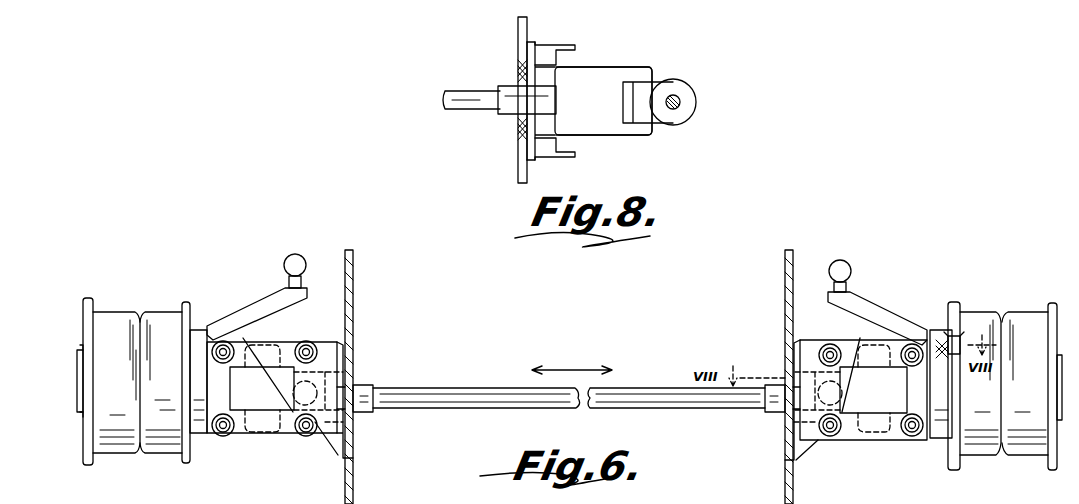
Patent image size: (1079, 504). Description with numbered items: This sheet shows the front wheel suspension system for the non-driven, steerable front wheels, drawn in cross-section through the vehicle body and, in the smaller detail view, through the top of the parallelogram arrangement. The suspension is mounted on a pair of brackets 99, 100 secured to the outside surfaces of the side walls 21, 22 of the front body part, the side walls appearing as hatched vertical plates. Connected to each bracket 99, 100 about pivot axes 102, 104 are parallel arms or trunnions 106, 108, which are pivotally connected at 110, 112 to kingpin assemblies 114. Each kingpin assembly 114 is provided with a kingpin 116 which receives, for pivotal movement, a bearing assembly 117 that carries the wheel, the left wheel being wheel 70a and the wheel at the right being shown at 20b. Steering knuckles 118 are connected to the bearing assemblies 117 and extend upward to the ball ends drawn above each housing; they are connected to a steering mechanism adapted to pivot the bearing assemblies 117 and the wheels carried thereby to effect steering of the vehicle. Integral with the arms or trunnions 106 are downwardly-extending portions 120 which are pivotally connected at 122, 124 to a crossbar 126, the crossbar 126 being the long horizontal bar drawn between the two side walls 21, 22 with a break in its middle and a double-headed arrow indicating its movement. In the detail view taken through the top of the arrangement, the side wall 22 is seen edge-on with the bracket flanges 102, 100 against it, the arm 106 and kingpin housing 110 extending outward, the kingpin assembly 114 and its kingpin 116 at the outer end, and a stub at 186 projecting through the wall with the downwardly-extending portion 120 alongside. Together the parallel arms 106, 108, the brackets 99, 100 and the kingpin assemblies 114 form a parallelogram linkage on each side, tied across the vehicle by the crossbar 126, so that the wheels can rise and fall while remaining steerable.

In FIG. 6, the wheel 20b is at (1018, 320).
In FIG. 6, the steerable wheel 70a is at (83, 431).
In FIG. 6, the side wall 21 is at (353, 301).
In FIG. 8, the side wall 22 is at (518, 166).
In FIG. 6, the side wall 22 is at (785, 300).
In FIG. 6, the bracket 99 is at (320, 445).
In FIG. 8, the bracket 100 is at (570, 158).
In FIG. 6, the bracket 100 is at (812, 447).
In FIG. 8, the pivot axis 102 is at (566, 45).
In FIG. 6, the pivot axis 102 is at (296, 362).
In FIG. 6, the pivot axis 104 is at (312, 422).
In FIG. 8, the arm or trunnion 106 is at (598, 108).
In FIG. 6, the arm or trunnion 106 is at (272, 345).
In FIG. 6, the arm or trunnion 108 is at (266, 432).
In FIG. 8, the pivotal connection 110 is at (644, 67).
In FIG. 6, the pivotal connection 110 is at (220, 345).
In FIG. 6, the pivotal connection 112 is at (222, 436).
In FIG. 8, the kingpin assembly 114 is at (690, 88).
In FIG. 6, the kingpin assembly 114 is at (218, 387).
In FIG. 8, the kingpin 116 is at (680, 118).
In FIG. 6, the kingpin 116 is at (956, 368).
In FIG. 6, the bearing assembly 117 is at (197, 330).
In FIG. 6, the steering knuckle 118 is at (262, 300).
In FIG. 8, the downwardly-extending portion 120 is at (522, 118).
In FIG. 6, the downwardly-extending portion 120 is at (353, 362).
In FIG. 6, the pivotal connection 122 is at (353, 430).
In FIG. 6, the pivotal connection 124 is at (785, 430).
In FIG. 6, the crossbar 126 is at (487, 392).
In FIG. 8, the stub shaft 186 is at (481, 91).